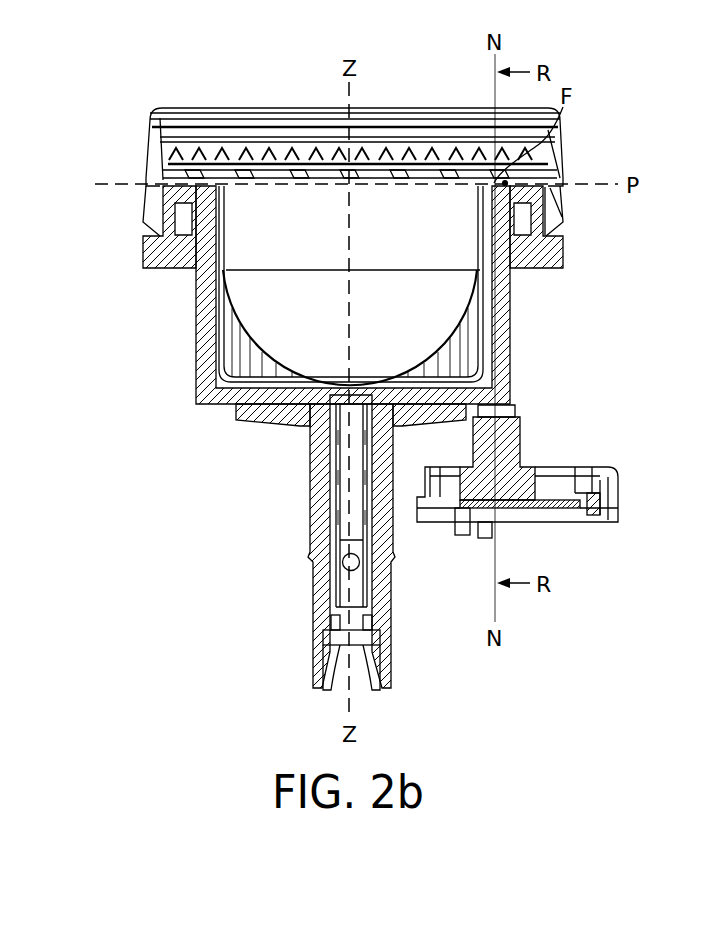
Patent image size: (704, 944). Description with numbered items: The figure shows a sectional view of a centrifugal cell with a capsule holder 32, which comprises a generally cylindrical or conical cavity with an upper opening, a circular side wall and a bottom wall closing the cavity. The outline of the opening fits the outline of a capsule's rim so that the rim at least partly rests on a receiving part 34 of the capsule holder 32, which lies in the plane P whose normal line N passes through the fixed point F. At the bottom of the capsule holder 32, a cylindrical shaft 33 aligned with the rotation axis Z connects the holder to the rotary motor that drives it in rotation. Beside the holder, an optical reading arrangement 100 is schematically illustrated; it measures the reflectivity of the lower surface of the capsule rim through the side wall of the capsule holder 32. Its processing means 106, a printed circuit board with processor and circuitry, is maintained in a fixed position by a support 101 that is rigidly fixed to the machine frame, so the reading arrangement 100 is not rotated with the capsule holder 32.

The capsule holder 32 is at (203, 299).
The cylindrical shaft 33 is at (352, 466).
The receiving part 34 is at (196, 183).
The optical reading arrangement 100 is at (624, 410).
The support 101 is at (438, 515).
The processing means 106 is at (567, 512).